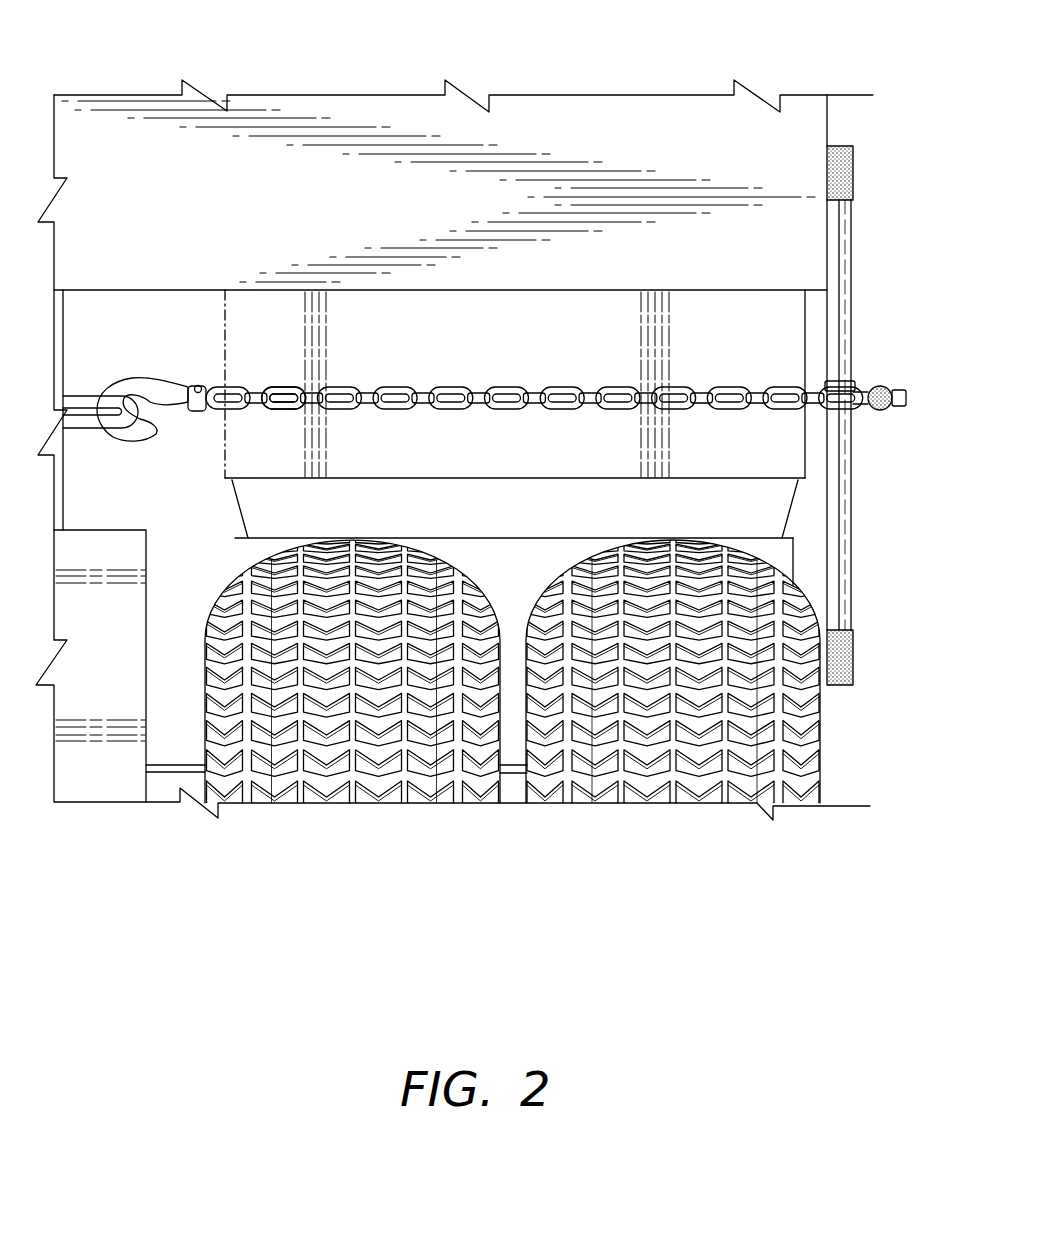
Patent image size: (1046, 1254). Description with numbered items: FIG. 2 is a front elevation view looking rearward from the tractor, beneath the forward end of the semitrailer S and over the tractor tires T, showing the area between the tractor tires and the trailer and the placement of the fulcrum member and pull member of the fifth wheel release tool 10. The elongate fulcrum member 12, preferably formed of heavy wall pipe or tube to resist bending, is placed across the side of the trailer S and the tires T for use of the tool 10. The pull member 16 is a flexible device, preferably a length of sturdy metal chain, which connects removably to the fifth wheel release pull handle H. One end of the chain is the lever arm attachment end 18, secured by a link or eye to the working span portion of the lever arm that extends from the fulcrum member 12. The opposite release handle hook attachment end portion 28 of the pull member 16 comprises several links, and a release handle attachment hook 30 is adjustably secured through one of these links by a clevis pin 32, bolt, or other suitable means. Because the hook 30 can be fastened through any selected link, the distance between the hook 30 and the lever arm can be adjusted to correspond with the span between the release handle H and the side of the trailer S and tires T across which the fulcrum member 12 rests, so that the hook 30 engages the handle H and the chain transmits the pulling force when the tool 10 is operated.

The tool 10 is at (495, 353).
The fulcrum member 12 is at (855, 302).
The pull member 16 is at (511, 387).
The lever arm attachment end 18 is at (813, 420).
The release handle hook attachment end portion 28 is at (290, 409).
The release handle attachment hook 30 is at (118, 384).
The clevis pin 32 is at (198, 384).
The fifth wheel release pull handle H is at (84, 433).
The semitrailer S is at (410, 220).
The tractor tires T is at (556, 590).